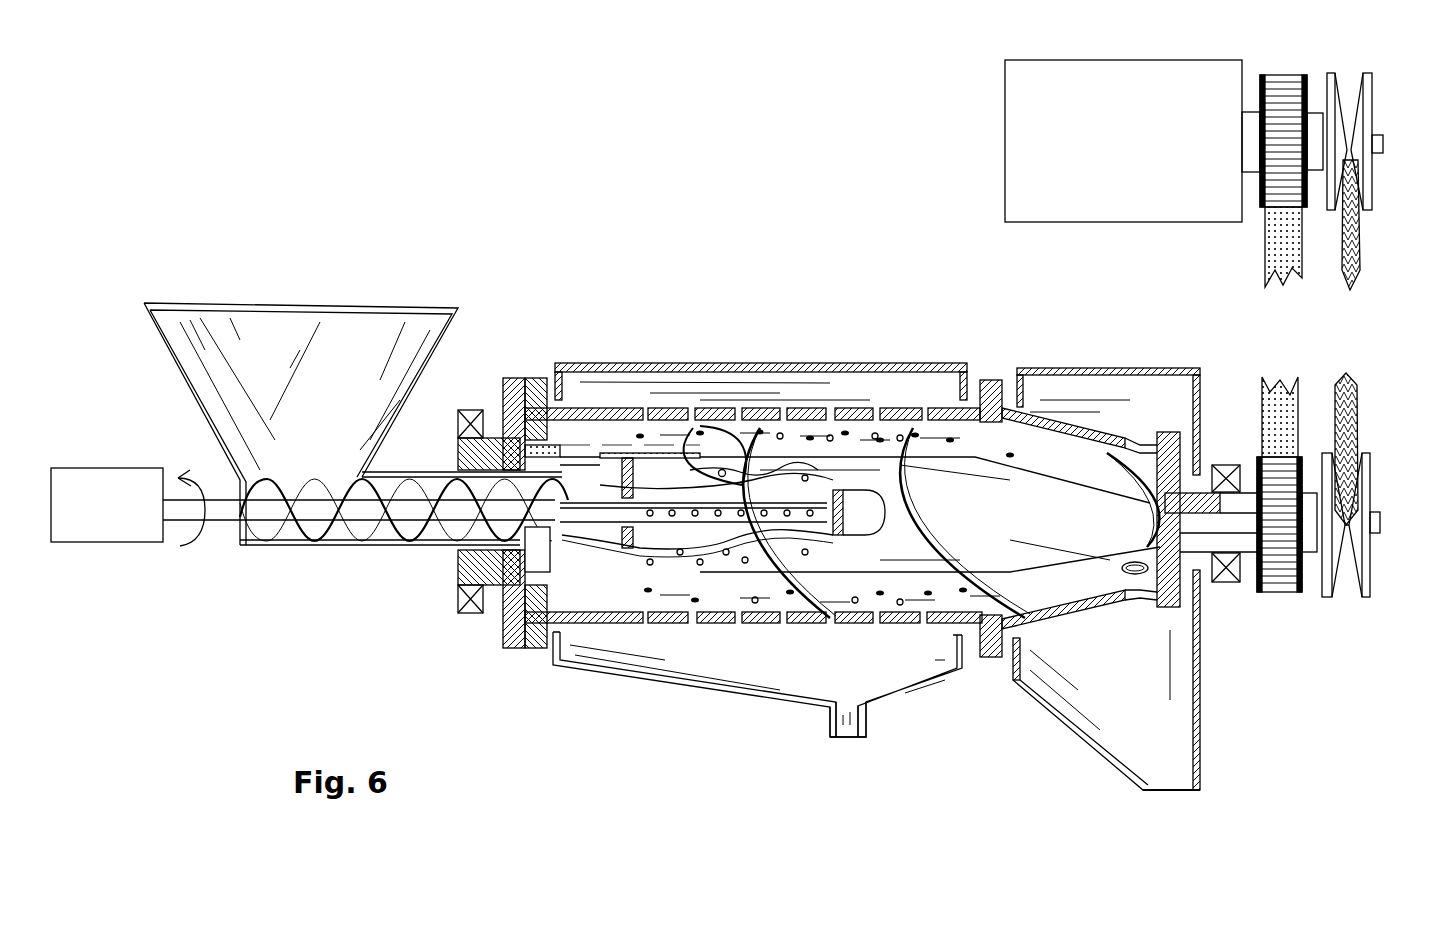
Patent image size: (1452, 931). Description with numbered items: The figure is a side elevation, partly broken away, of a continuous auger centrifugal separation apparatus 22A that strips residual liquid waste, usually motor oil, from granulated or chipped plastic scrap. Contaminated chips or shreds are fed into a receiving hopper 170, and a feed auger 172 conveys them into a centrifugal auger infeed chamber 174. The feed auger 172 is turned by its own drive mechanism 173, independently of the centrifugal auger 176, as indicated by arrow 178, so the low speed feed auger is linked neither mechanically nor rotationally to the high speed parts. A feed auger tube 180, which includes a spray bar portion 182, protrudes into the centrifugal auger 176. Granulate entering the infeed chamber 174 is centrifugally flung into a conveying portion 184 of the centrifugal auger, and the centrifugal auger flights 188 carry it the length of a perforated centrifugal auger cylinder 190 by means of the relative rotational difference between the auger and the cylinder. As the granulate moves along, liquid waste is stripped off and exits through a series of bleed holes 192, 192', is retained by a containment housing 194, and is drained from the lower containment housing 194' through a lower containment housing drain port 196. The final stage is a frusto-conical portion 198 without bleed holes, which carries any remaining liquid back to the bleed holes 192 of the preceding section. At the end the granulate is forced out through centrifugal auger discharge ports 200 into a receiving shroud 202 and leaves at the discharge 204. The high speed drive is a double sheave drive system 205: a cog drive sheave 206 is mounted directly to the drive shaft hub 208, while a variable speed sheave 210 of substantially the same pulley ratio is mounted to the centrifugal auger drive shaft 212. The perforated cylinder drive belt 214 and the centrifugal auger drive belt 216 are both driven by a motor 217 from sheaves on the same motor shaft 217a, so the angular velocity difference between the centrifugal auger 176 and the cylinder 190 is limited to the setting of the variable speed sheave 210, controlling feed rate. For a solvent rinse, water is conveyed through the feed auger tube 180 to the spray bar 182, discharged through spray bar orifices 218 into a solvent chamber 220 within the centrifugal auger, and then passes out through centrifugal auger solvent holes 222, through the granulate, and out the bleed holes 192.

The apparatus 22A is at (797, 253).
The receiving hopper 170 is at (452, 331).
The feed auger 172 is at (288, 503).
The drive mechanism 173 is at (110, 542).
The centrifugal auger infeed chamber 174 is at (610, 490).
The centrifugal auger 176 is at (956, 525).
The arrow 178 is at (193, 532).
The feed auger tube 180 is at (214, 518).
The spray bar 182 is at (636, 503).
The conveying portion 184 is at (604, 450).
The centrifugal auger flights 188 is at (1000, 492).
The perforated centrifugal auger cylinder 190 is at (763, 518).
The bleed holes 192 is at (752, 403).
The bleed holes 192' is at (753, 632).
The containment housing 194 is at (761, 366).
The lower containment housing 194' is at (757, 684).
The lower containment housing drain port 196 is at (868, 722).
The frusto-conical portion 198 is at (1078, 433).
The centrifugal auger discharge ports 200 is at (1130, 598).
The receiving shroud 202 is at (1193, 739).
The discharge 204 is at (1170, 792).
The double sheave drive system 205 is at (1385, 440).
The cog drive sheave 206 is at (1284, 592).
The drive shaft hub 208 is at (1237, 538).
The variable speed sheave 210 is at (1369, 590).
The centrifugal auger drive shaft 212 is at (1381, 522).
The perforated cylinder drive belt 214 is at (1272, 378).
The centrifugal auger drive belt 216 is at (1338, 386).
The motor 217 is at (1086, 60).
The motor shaft 217a is at (1384, 145).
The spray bar orifices 218 is at (818, 523).
The solvent chamber 220 is at (697, 509).
The centrifugal auger solvent holes 222 is at (809, 476).